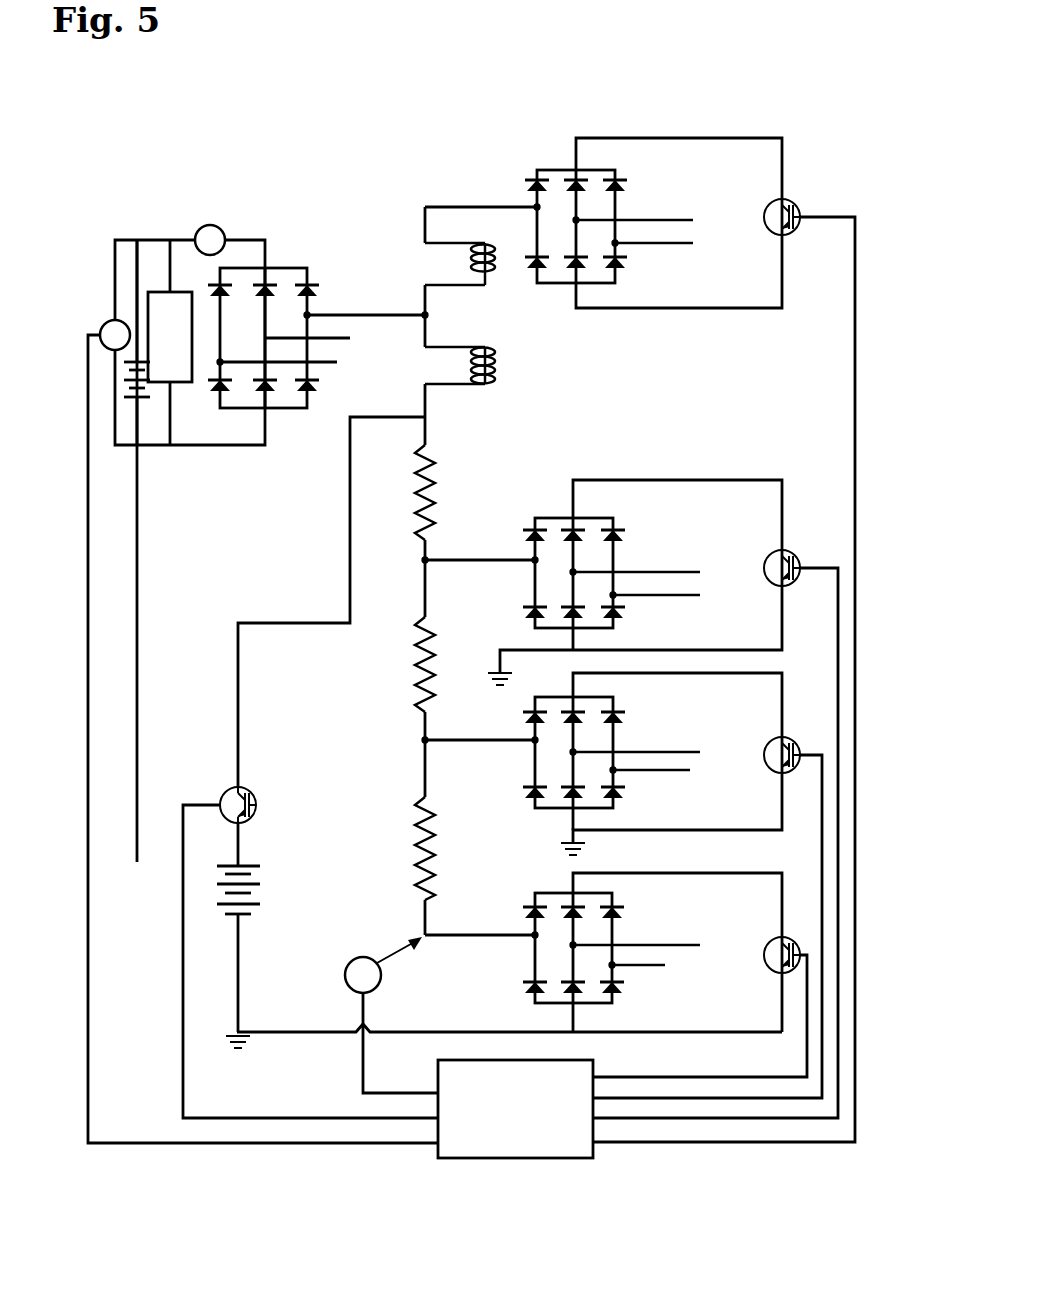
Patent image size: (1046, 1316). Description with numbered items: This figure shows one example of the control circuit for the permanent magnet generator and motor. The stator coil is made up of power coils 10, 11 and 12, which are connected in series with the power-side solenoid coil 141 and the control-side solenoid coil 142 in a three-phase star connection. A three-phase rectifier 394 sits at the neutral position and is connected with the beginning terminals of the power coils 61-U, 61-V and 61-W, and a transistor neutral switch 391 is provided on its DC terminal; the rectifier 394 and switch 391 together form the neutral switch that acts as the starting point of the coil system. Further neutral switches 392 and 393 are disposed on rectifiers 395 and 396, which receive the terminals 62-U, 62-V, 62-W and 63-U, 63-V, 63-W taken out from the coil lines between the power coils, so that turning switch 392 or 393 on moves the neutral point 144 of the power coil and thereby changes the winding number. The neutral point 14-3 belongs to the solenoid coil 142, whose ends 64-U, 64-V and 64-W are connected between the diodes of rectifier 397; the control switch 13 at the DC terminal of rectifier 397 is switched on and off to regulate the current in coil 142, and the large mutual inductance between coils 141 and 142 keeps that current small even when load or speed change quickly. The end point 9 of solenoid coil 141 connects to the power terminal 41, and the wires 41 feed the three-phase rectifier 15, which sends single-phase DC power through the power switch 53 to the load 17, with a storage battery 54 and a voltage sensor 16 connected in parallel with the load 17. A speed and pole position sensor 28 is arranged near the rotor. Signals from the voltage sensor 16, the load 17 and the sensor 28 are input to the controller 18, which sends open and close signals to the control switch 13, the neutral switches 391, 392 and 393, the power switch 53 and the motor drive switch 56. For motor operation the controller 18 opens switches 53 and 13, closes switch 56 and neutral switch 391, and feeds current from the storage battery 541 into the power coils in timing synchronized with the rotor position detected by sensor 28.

The end point of solenoid coil 9 is at (425, 315).
The power coil 10 is at (416, 850).
The power coil 11 is at (414, 672).
The power coil 12 is at (417, 493).
The control switch 13 is at (793, 205).
The rectifier 15 is at (283, 262).
The sensor of voltage 16 is at (105, 322).
The load 17 is at (178, 378).
The controller 18 is at (518, 1147).
The speed and position sensor 28 is at (345, 978).
The power terminal 41 is at (321, 334).
The power switch 53 is at (222, 228).
The storage battery 54 is at (148, 400).
The motor drive switch 56 is at (262, 805).
The solenoid coil of power side 141 is at (495, 365).
The solenoid coil of control side 142 is at (487, 273).
The neutral point of power coil 144 is at (567, 893).
The neutral point of solenoid coil 14-3 is at (590, 165).
The neutral switch 391 is at (773, 950).
The neutral switch 392 is at (765, 770).
The neutral switch 393 is at (775, 562).
The three phase rectifier 394 is at (527, 957).
The rectifier 395 is at (532, 765).
The rectifier 396 is at (535, 600).
The rectifier 397 is at (535, 188).
The storage battery 541 is at (272, 870).
The power coil terminal 61-U is at (481, 933).
The power coil terminal 61-V is at (635, 935).
The power coil terminal 61-W is at (645, 961).
The power coil terminal 62-U is at (480, 730).
The power coil terminal 62-V is at (635, 743).
The power coil terminal 62-W is at (650, 765).
The power coil terminal 63-U is at (480, 550).
The power coil terminal 63-V is at (635, 562).
The power coil terminal 63-W is at (655, 585).
The solenoid coil end 64-U is at (482, 197).
The solenoid coil end 64-V is at (633, 210).
The solenoid coil end 64-W is at (652, 233).